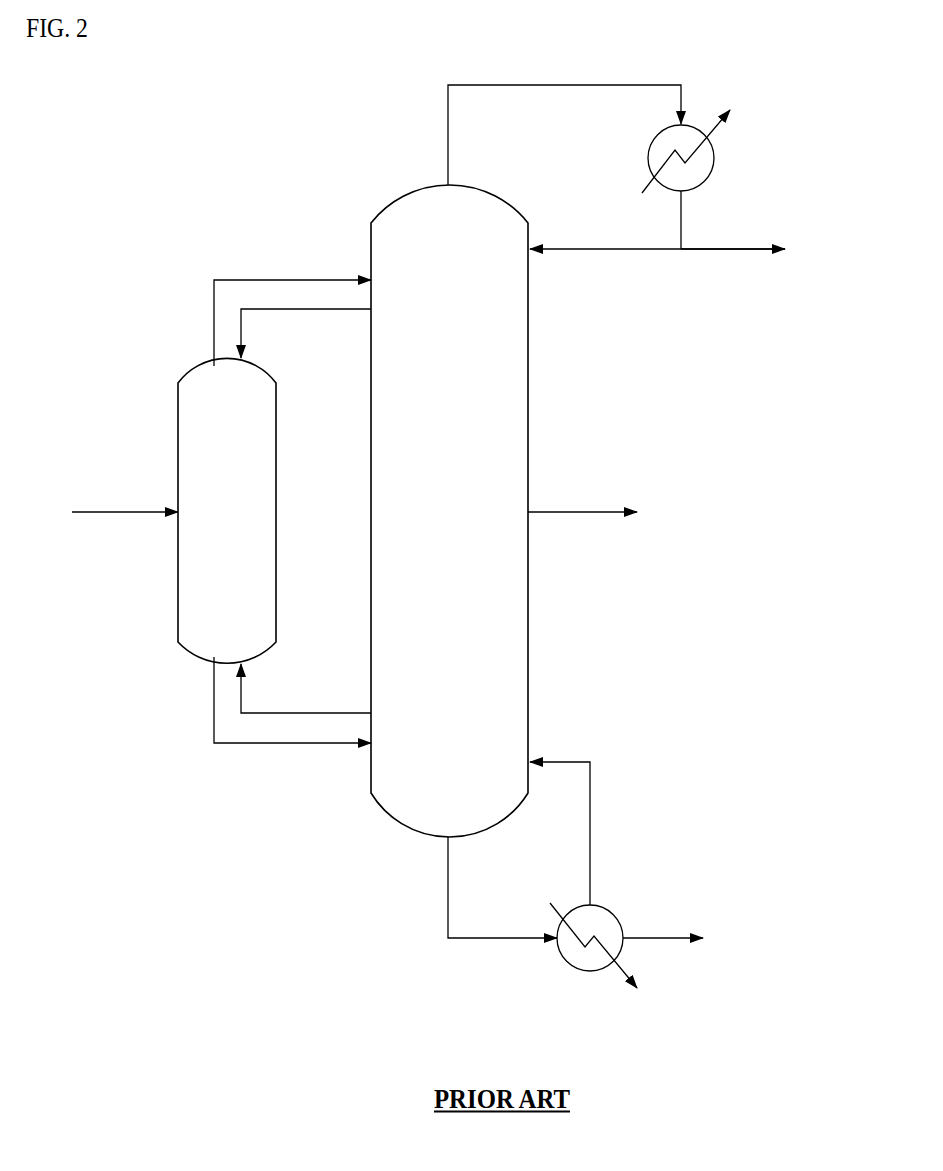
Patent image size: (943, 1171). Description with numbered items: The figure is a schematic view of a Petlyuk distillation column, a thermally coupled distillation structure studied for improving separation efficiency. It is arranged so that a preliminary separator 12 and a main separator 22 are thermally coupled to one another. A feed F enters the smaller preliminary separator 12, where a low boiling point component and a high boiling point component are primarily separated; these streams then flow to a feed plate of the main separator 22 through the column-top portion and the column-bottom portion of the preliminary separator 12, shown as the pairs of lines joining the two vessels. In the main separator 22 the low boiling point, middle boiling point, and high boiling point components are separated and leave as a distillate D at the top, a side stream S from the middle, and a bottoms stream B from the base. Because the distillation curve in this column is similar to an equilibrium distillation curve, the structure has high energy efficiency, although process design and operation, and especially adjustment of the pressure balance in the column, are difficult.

The preliminary separator 12 is at (178, 443).
The main separator 22 is at (521, 416).
The feed stream F is at (113, 515).
The side stream S is at (595, 513).
The distillate stream D is at (671, 248).
The bottoms stream B is at (679, 937).